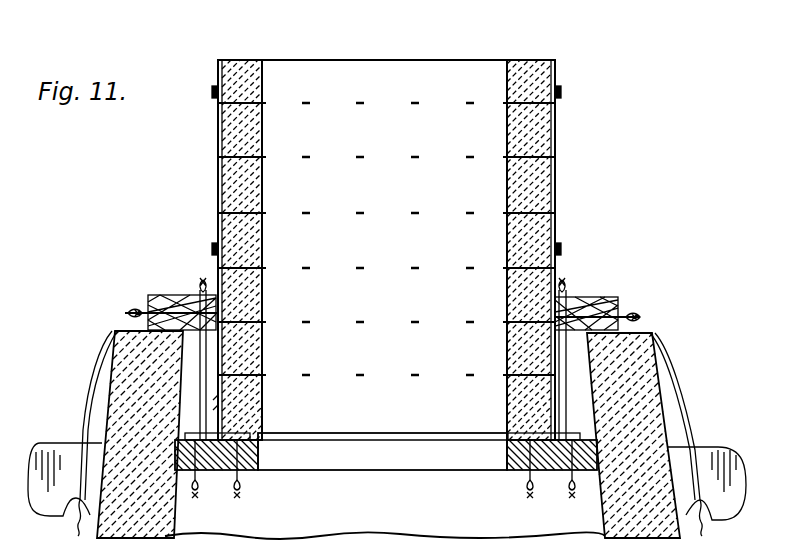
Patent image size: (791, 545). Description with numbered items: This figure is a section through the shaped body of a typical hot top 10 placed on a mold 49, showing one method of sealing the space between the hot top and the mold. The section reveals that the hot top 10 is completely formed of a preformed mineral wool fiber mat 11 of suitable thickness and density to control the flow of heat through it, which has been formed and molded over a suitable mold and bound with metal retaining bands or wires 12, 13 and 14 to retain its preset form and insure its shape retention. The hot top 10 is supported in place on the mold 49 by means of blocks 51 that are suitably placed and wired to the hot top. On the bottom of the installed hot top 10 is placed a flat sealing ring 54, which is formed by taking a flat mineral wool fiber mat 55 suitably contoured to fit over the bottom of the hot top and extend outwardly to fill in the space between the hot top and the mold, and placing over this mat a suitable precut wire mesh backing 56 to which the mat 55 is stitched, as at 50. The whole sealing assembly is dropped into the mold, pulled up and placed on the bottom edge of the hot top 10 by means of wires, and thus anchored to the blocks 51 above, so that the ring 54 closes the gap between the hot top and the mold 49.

The hot top 10 is at (472, 44).
The preformed mineral wool fiber mat 11 is at (247, 60).
The metal retaining band 12 is at (212, 92).
The metal retaining band 13 is at (213, 249).
The metal retaining band 14 is at (213, 408).
The mold 49 is at (165, 533).
The stitching 50 is at (234, 470).
The block 51 is at (162, 298).
The flat sealing ring 54 is at (392, 469).
The flat mineral wool fiber mat 55 is at (250, 472).
The precut wire mesh backing 56 is at (228, 436).